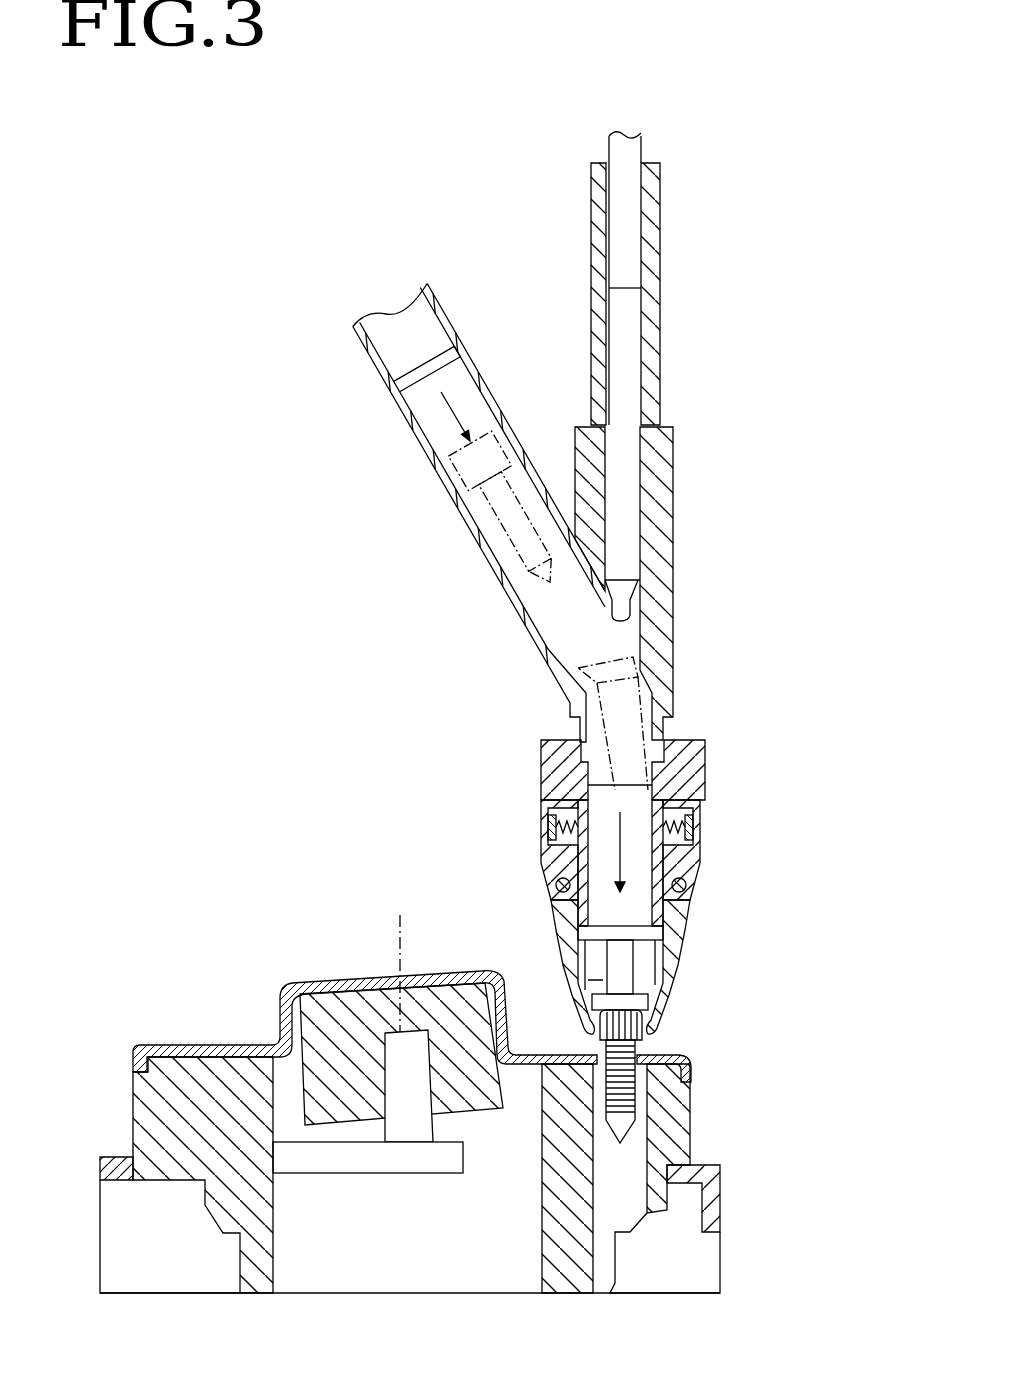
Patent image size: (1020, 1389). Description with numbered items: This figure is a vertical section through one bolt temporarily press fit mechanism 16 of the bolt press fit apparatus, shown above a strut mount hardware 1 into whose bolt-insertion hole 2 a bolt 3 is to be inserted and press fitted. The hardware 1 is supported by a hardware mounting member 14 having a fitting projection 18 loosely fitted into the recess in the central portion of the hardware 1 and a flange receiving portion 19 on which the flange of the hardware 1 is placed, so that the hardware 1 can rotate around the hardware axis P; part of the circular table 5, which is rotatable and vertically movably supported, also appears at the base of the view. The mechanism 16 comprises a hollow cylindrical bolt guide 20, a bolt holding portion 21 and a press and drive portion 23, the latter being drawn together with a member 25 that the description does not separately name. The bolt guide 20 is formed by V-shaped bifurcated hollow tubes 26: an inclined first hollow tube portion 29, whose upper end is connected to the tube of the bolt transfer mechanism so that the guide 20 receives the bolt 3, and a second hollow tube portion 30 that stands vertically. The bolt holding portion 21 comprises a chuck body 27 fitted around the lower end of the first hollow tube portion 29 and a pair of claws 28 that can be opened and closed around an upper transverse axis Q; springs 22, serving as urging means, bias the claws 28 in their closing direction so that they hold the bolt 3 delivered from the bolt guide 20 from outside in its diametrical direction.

The strut mount hardware 1 is at (304, 982).
The bolt-insertion hole 2 is at (641, 1076).
The bolt 3 is at (505, 535).
The circular table 5 is at (700, 1165).
The hardware mounting member 14 is at (133, 1097).
The bolt temporarily press fit mechanism 16 is at (279, 286).
The fitting projection 18 is at (458, 993).
The flange receiving portion 19 is at (208, 1053).
The bolt guide 20 is at (441, 513).
The bolt holding portion 21 is at (740, 858).
The spring 22 is at (693, 830).
The press and drive portion 23 is at (696, 376).
The push rod 25 is at (623, 362).
The V-shaped bifurcated hollow tubes 26 is at (688, 453).
The chuck body 27 is at (700, 762).
The claws 28 is at (683, 960).
The first hollow tube portion 29 is at (441, 497).
The second hollow tube portion 30 is at (660, 189).
The hardware axis P is at (400, 940).
The upper transverse axis Q is at (680, 884).